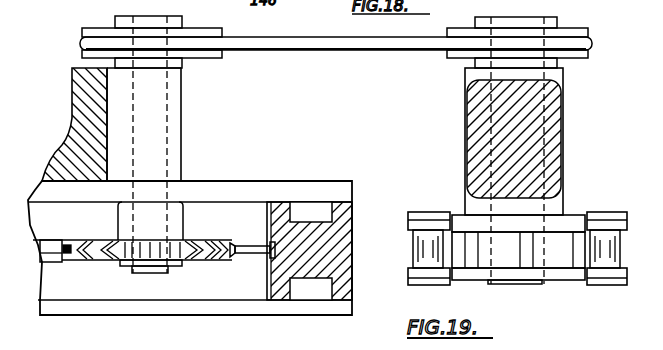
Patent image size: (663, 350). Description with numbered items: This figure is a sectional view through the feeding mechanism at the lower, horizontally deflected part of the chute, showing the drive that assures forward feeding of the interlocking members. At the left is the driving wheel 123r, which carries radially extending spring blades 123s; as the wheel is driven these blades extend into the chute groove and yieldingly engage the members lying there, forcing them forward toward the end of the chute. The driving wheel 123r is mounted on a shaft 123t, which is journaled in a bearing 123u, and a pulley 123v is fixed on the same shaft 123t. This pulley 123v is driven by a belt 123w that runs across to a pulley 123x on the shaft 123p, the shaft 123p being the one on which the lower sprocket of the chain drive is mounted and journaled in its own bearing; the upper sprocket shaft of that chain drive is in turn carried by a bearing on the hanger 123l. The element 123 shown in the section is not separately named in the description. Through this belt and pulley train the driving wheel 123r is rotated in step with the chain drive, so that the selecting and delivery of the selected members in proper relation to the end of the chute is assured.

The shaft 123 is at (257, 256).
The hanger 123l is at (495, 258).
The shaft 123p is at (525, 284).
The driving wheel 123r is at (92, 258).
The spring blades 123s is at (92, 240).
The shaft 123t is at (150, 273).
The bearing 123u is at (170, 120).
The pulley 123v is at (204, 31).
The belt 123w is at (410, 42).
The pulley 123x is at (568, 36).